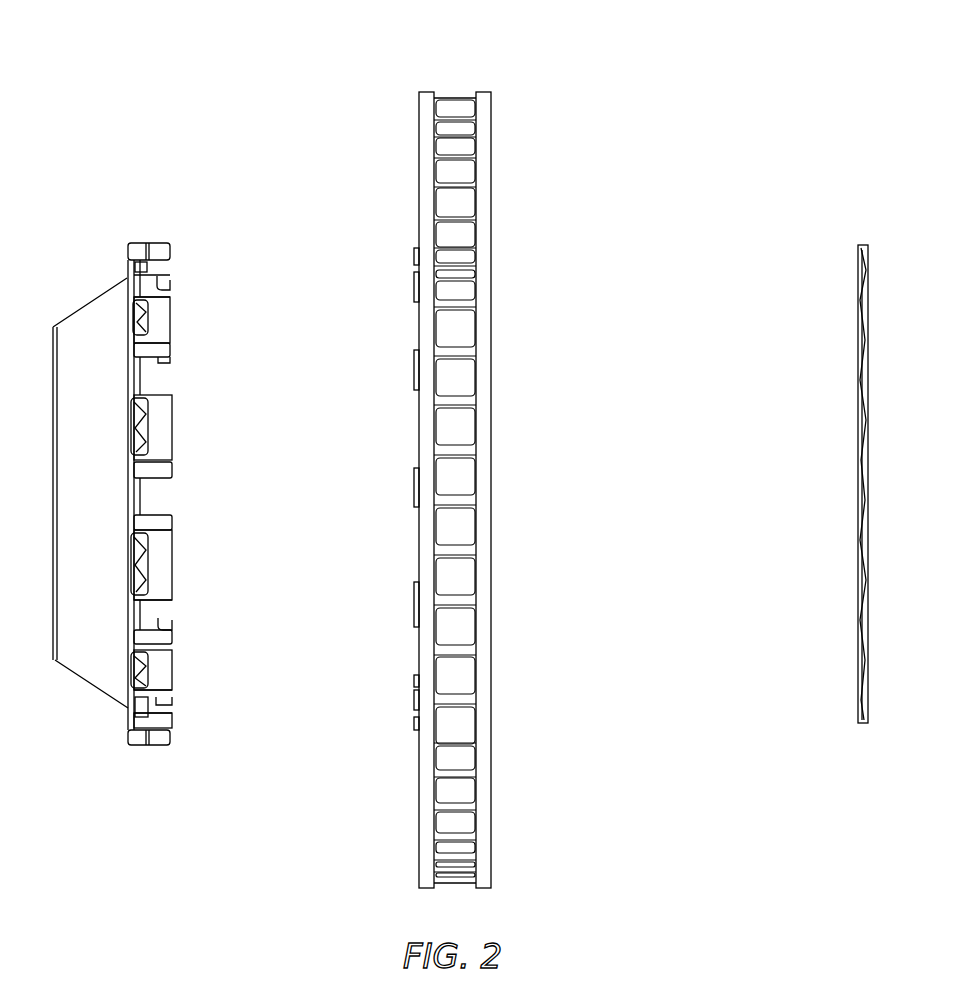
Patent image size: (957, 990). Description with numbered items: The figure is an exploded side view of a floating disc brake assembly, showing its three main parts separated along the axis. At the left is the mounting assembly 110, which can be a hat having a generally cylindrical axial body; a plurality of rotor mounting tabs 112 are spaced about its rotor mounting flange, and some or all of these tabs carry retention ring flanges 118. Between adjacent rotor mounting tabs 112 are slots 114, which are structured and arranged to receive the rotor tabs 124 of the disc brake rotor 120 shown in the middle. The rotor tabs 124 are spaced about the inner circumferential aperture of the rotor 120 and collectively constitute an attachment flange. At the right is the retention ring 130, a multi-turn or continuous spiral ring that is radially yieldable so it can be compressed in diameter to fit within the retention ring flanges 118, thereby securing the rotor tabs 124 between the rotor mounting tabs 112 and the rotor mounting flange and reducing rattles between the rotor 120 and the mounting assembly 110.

The mounting assembly 110 is at (95, 300).
The rotor mounting tabs 112 is at (152, 243).
The slots 114 is at (155, 378).
The retention ring flanges 118 is at (168, 288).
The disc brake rotor 120 is at (455, 95).
The rotor tabs 124 is at (418, 476).
The retention ring 130 is at (858, 465).